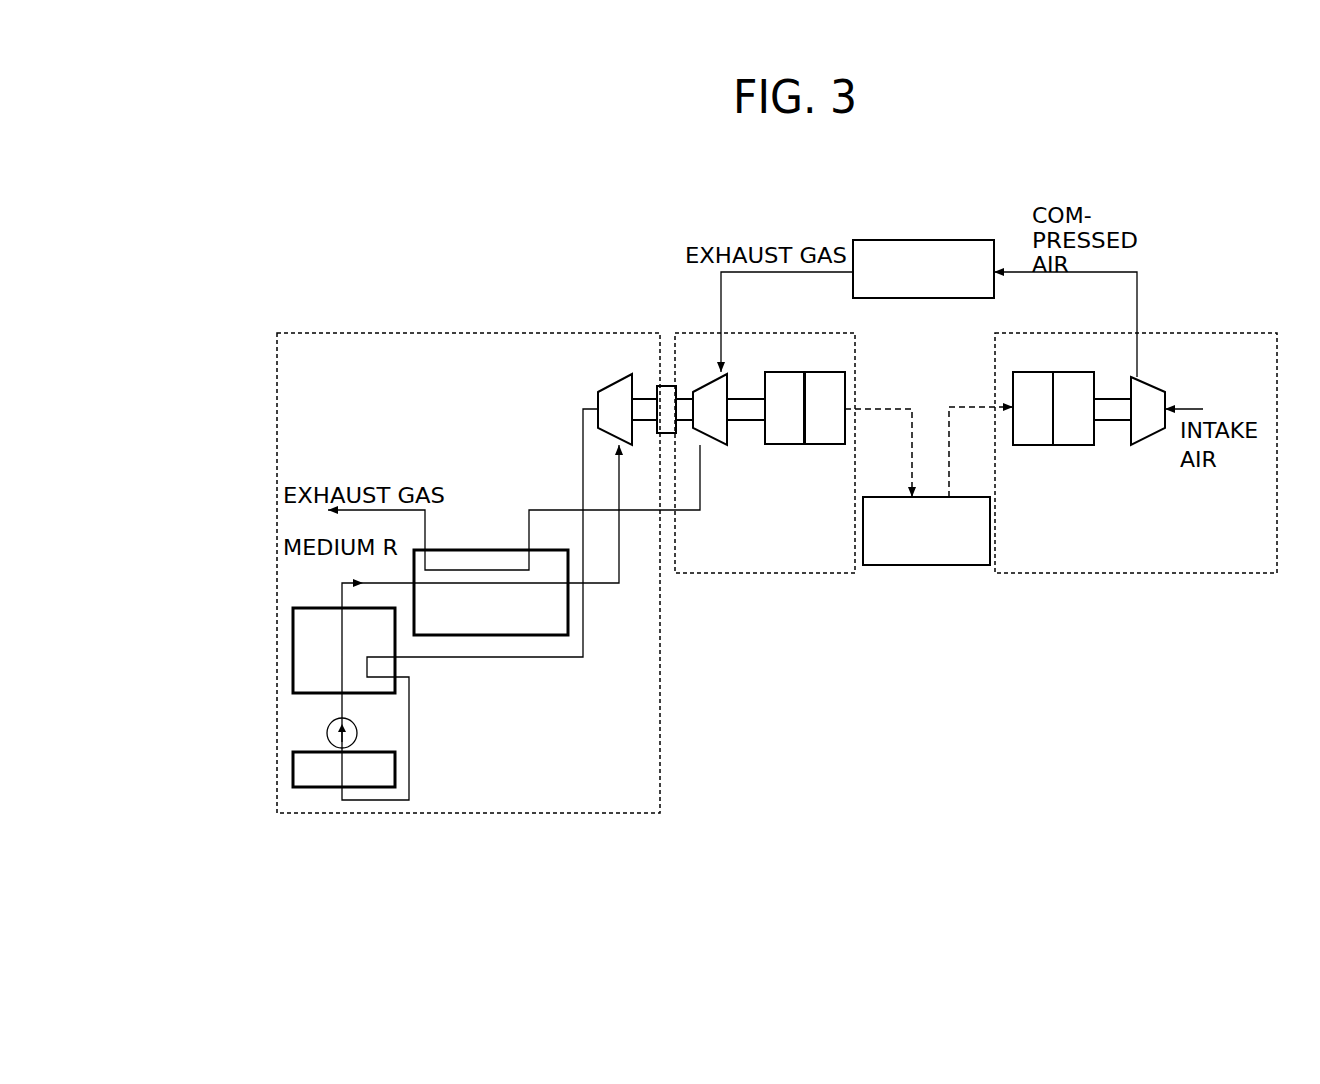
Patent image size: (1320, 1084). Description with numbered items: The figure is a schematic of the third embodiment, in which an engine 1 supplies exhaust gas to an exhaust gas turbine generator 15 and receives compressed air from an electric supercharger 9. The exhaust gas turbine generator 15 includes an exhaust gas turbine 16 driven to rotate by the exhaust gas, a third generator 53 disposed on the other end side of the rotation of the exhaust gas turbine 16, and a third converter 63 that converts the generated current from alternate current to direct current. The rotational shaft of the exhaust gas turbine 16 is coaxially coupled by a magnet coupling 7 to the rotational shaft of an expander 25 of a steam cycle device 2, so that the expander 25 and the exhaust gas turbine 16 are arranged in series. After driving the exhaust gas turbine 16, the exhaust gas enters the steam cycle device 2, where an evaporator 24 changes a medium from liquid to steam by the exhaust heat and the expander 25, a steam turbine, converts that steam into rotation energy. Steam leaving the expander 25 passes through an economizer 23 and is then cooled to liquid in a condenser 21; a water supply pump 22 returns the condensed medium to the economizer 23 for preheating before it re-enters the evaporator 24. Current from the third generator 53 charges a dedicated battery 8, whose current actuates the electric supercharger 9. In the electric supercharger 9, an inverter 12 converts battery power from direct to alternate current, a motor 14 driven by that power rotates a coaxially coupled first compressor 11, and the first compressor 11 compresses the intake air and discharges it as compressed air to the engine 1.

The engine 1 is at (937, 240).
The steam cycle device 2 is at (663, 723).
The magnet coupling 7 is at (667, 386).
The dedicated battery 8 is at (938, 565).
The electric supercharger 9 is at (1048, 578).
The first compressor 11 is at (1150, 380).
The inverter 12 is at (1032, 444).
The motor 14 is at (1068, 444).
The exhaust gas turbine generator 15 is at (703, 327).
The exhaust gas turbine 16 is at (730, 383).
The condenser 21 is at (318, 787).
The water supply pump 22 is at (327, 730).
The economizer 23 is at (293, 647).
The evaporator 24 is at (493, 550).
The expander 25 is at (612, 379).
The third generator 53 is at (783, 444).
The third converter 63 is at (823, 444).